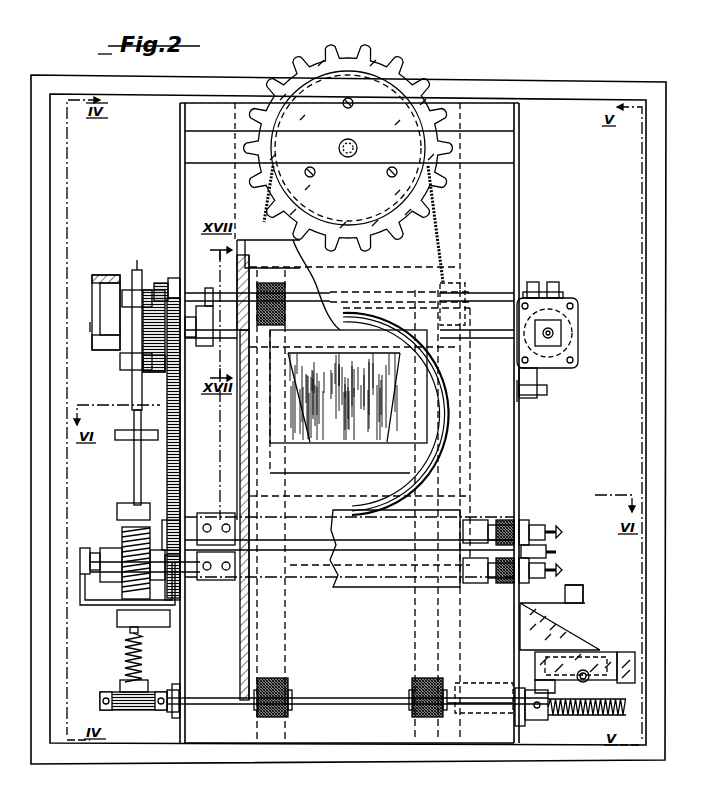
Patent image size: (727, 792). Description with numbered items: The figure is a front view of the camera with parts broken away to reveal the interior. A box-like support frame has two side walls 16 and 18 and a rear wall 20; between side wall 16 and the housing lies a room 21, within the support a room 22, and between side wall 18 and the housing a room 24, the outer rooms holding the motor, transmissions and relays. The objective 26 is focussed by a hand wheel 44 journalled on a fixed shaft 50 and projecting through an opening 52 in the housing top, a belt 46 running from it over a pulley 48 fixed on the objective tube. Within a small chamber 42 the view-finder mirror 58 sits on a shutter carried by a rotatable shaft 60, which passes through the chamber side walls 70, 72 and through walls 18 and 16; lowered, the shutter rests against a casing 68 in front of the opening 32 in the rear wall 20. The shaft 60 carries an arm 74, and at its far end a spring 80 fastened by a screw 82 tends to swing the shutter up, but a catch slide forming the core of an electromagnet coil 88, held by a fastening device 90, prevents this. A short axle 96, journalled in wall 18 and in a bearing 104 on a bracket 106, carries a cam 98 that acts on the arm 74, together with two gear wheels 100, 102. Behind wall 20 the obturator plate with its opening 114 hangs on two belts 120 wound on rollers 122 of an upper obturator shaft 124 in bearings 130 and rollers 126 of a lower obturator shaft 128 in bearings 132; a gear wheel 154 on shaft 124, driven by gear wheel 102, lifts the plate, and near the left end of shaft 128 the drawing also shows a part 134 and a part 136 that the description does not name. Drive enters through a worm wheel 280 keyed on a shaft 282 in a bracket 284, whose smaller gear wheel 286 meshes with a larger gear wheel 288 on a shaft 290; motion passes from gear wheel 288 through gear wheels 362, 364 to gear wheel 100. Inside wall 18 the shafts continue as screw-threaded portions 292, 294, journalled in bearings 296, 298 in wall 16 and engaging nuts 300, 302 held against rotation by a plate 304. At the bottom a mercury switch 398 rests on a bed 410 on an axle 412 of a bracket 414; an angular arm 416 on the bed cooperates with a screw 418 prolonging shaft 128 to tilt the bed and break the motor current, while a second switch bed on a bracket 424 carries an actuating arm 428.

The side wall 16 is at (519, 193).
The side wall 18 is at (180, 194).
The rear wall 20 is at (349, 423).
The room 21 is at (594, 418).
The room 22 is at (213, 427).
The room 24 is at (90, 385).
The objective 26 is at (450, 463).
The opening 32 is at (284, 456).
The chamber 42 is at (240, 440).
The hand wheel 44 is at (400, 80).
The belt 46 is at (440, 240).
The pulley 48 is at (453, 410).
The fixed shaft 50 is at (358, 148).
The opening 52 is at (264, 92).
The mirror 58 is at (362, 438).
The rotatable shaft 60 is at (234, 340).
The casing 68 is at (350, 473).
The side wall 70 is at (238, 403).
The side wall 72 is at (462, 373).
The arm 74 is at (213, 317).
The spring 80 is at (538, 378).
The screw 82 is at (546, 391).
The electromagnet coil 88 is at (572, 324).
The fastening device 90 is at (578, 345).
The short axle 96 is at (129, 345).
The cam 98 is at (212, 290).
The gear wheel 100 is at (166, 355).
The gear wheel 102 is at (155, 372).
The bearing 104 is at (106, 312).
The bracket 106 is at (96, 339).
The opening 114 is at (310, 577).
The belts 120 is at (280, 688).
The rollers 122 is at (285, 296).
The upper obturator shaft 124 is at (349, 308).
The rollers 126 is at (288, 697).
The lower obturator shaft 128 is at (340, 705).
The bearings 130 is at (173, 277).
The bearings 132 is at (171, 716).
The shaft end 134 is at (175, 696).
The solenoid 136 is at (120, 711).
The gear wheel 154 is at (159, 282).
The worm wheel 280 is at (128, 541).
The shaft 282 is at (85, 549).
The bracket 284 is at (86, 600).
The smaller gear wheel 286 is at (180, 585).
The larger gear wheel 288 is at (170, 514).
The shaft 290 is at (496, 524).
The screw-threaded portion 292 is at (472, 584).
The screw-threaded portion 294 is at (472, 520).
The bearing 296 is at (521, 581).
The bearing 298 is at (522, 524).
The nut 300 is at (222, 580).
The nut 302 is at (218, 513).
The plate 304 is at (305, 551).
The gear wheel 362 is at (168, 492).
The gear wheel 364 is at (180, 413).
The mercury switch 398 is at (596, 652).
The bed 410 is at (620, 655).
The axle 412 is at (580, 680).
The bracket 414 is at (538, 720).
The angular arm 416 is at (580, 689).
The screw 418 is at (585, 716).
The bracket 424 is at (560, 632).
The actuating arm 428 is at (505, 700).